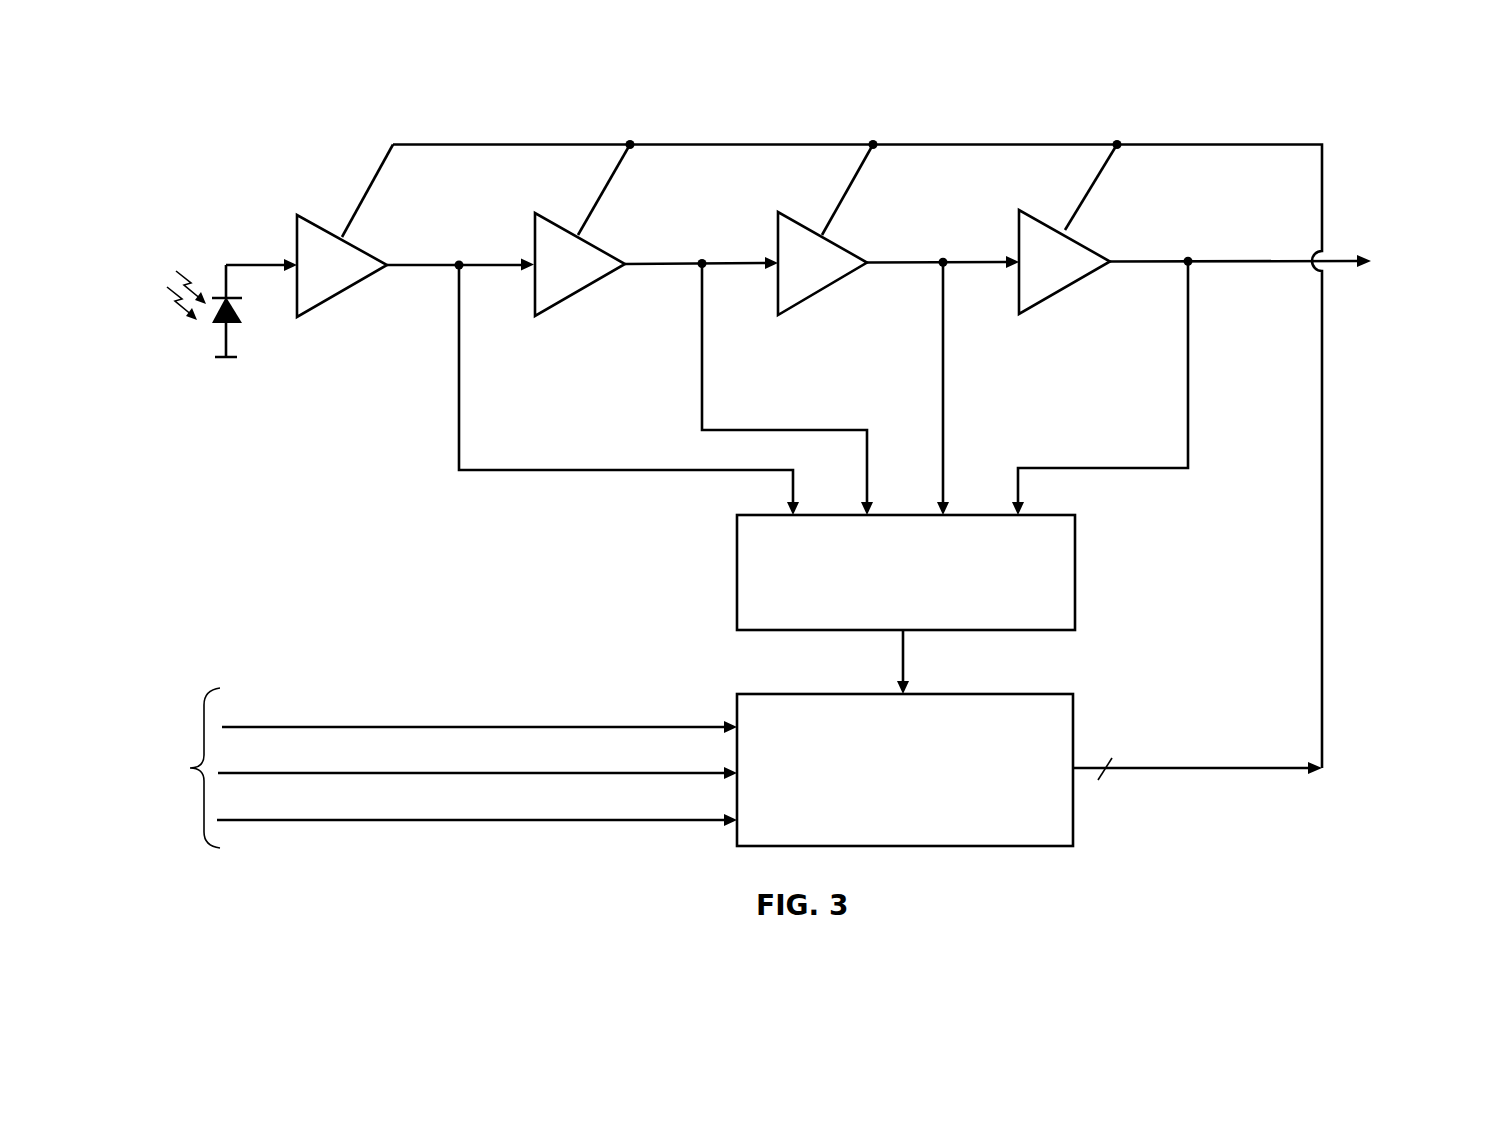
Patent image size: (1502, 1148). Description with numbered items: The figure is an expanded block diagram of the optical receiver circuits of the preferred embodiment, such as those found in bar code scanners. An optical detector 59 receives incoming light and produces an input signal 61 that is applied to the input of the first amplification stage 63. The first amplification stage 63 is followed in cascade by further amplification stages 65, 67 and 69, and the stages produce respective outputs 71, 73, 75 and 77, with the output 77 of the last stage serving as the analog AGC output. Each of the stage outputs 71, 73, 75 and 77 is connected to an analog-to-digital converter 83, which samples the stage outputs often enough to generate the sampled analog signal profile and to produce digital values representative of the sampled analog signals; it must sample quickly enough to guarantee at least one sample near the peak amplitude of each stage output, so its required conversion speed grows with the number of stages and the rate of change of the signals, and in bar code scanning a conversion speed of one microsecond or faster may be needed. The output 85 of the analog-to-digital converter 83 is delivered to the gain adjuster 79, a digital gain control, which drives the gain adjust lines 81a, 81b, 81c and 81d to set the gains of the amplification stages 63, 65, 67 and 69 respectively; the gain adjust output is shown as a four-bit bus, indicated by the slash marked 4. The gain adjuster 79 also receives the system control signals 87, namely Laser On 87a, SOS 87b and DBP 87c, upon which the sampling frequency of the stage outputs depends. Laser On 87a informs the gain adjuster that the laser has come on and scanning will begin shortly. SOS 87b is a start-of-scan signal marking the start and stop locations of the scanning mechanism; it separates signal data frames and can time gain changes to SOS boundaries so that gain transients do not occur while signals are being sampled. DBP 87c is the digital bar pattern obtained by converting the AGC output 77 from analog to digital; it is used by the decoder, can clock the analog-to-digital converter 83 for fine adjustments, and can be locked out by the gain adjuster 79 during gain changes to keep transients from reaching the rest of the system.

The optical detector 59 is at (233, 323).
The input signal 61 is at (260, 265).
The first amplification stage 63 is at (347, 293).
The amplification stage 65 is at (585, 290).
The amplification stage 67 is at (830, 289).
The amplification stage 69 is at (1070, 287).
The output 71 is at (422, 265).
The output 73 is at (653, 264).
The output 75 is at (895, 263).
The output 77 is at (1138, 261).
The gain adjuster 79 is at (1073, 806).
The gain adjust line 81a is at (367, 192).
The gain adjust line 81b is at (600, 192).
The gain adjust line 81c is at (845, 192).
The gain adjust line 81d is at (1085, 190).
The analog-to-digital converter 83 is at (1075, 547).
The output of the ADC 85 is at (903, 665).
The system control signals 87 is at (186, 768).
The Laser On signal 87a is at (495, 727).
The SOS signal 87b is at (495, 820).
The DBP signal 87c is at (495, 773).
The 4-bit gain adjust bus width 4 is at (1107, 753).